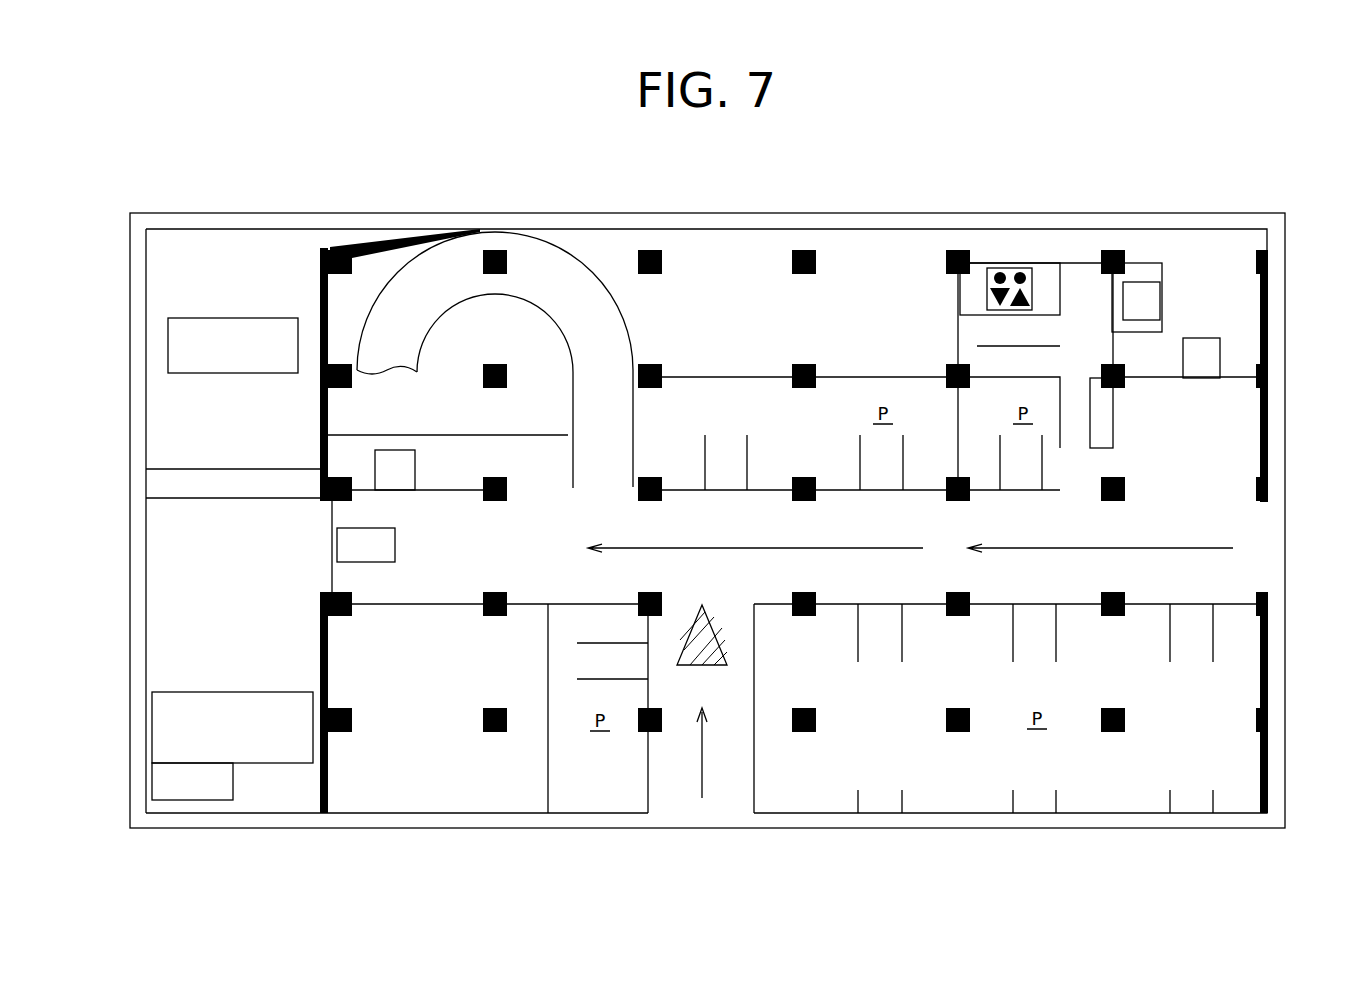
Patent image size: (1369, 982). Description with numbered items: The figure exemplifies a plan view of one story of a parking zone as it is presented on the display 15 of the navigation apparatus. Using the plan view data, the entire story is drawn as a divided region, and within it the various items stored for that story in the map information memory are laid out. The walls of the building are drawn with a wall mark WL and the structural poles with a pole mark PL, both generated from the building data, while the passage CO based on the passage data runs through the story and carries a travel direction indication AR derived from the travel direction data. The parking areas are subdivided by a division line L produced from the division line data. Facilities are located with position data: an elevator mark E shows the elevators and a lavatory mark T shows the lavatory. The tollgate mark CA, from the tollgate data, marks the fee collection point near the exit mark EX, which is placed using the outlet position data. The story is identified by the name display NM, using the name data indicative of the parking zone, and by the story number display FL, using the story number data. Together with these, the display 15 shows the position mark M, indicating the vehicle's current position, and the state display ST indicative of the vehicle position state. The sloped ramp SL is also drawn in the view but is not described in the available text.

The display 15 is at (1285, 222).
The wall mark WL is at (390, 240).
The slope SL is at (553, 258).
The lavatory mark T is at (1010, 268).
The elevator mark E is at (1205, 338).
The state display ST is at (168, 348).
The pole mark PL is at (947, 262).
The tollgate mark CA is at (392, 493).
The exit mark EX is at (337, 548).
The travel direction indication AR is at (803, 548).
The passage CO is at (1275, 548).
The name display NM is at (152, 727).
The story number display FL is at (152, 782).
The division line L is at (902, 643).
The position mark M is at (713, 660).